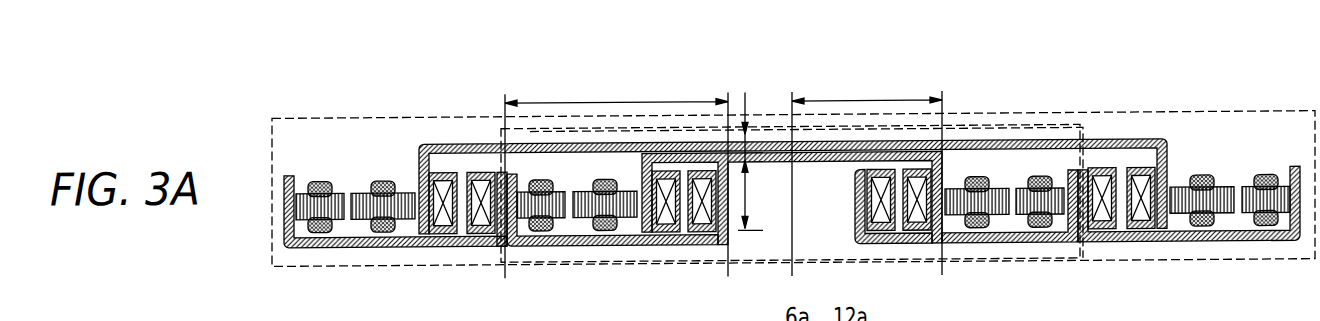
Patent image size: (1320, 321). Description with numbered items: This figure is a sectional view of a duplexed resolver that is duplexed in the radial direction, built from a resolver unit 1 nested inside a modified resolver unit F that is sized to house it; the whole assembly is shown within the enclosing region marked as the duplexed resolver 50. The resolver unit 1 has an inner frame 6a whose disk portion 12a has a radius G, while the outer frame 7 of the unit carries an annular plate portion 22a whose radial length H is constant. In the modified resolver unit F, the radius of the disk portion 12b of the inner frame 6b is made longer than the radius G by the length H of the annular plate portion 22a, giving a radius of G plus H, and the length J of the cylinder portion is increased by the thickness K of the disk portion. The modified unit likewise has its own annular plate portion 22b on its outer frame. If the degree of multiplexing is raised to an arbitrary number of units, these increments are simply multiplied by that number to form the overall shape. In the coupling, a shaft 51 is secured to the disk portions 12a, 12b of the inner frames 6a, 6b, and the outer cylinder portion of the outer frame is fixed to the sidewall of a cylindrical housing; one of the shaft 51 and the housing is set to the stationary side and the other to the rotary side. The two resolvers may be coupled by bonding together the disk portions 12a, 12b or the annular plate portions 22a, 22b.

The stage 50 is at (265, 121).
The resolver unit 1 is at (999, 263).
The disk portion 12a is at (941, 142).
The disk portion 12b is at (1109, 142).
The inner frame 6a is at (975, 138).
The inner frame 6b is at (1180, 136).
The annular plate portion 22a is at (608, 245).
The annular plate portion 22b is at (420, 245).
The shaft 51 is at (680, 315).
The outer frame 7 is at (568, 315).
The modified resolver unit F is at (1185, 263).
The length of annular plate portion H is at (616, 174).
The radius of disk portion G is at (867, 173).
The length of cylinder portion J is at (751, 161).
The thickness of disk portion K is at (769, 160).